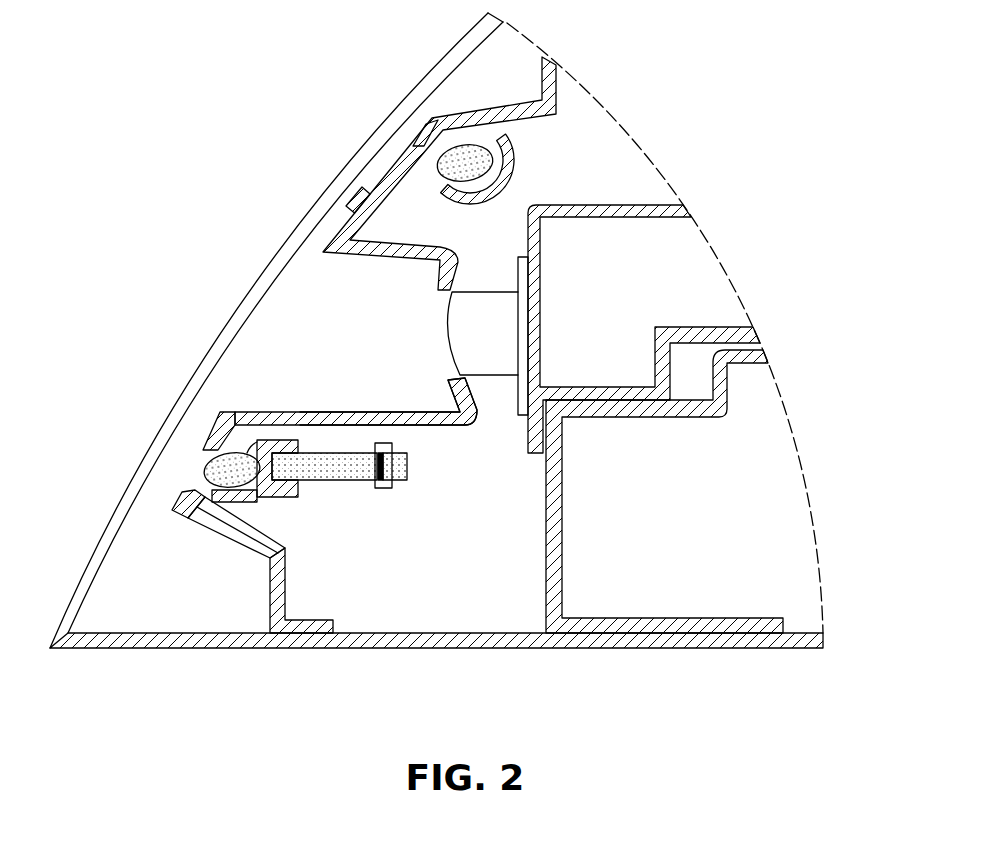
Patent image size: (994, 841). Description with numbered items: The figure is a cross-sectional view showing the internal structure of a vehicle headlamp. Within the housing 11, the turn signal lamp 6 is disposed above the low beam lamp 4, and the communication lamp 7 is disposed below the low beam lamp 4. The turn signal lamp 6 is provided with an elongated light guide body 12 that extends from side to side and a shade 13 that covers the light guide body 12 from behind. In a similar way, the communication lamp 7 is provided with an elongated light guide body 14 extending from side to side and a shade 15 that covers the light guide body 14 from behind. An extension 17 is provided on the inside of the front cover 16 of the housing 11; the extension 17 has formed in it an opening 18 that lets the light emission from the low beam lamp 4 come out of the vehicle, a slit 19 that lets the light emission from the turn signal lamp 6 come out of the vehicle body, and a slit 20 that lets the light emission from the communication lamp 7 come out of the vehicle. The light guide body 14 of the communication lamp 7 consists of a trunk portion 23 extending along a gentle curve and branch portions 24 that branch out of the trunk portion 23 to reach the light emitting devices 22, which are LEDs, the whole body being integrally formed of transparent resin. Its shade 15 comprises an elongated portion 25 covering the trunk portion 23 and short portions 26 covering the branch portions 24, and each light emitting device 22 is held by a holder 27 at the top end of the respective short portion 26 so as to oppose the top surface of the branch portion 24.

The low beam lamp 4 is at (446, 312).
The turn signal lamp 6 is at (410, 132).
The communication lamp 7 is at (197, 460).
The housing 11 is at (430, 648).
The light guide body 12 is at (466, 145).
The shade 13 is at (513, 152).
The light guide body 14 is at (240, 414).
The shade 15 is at (272, 436).
The front cover 16 is at (242, 306).
The extension 17 is at (323, 215).
The opening 18 is at (457, 370).
The slit 19 is at (386, 182).
The slit 20 is at (178, 483).
The light emitting device 22 is at (407, 465).
The trunk portion 23 is at (226, 512).
The branch portion 24 is at (335, 412).
The elongated portion 25 is at (268, 548).
The short portion 26 is at (345, 483).
The holder 27 is at (391, 488).